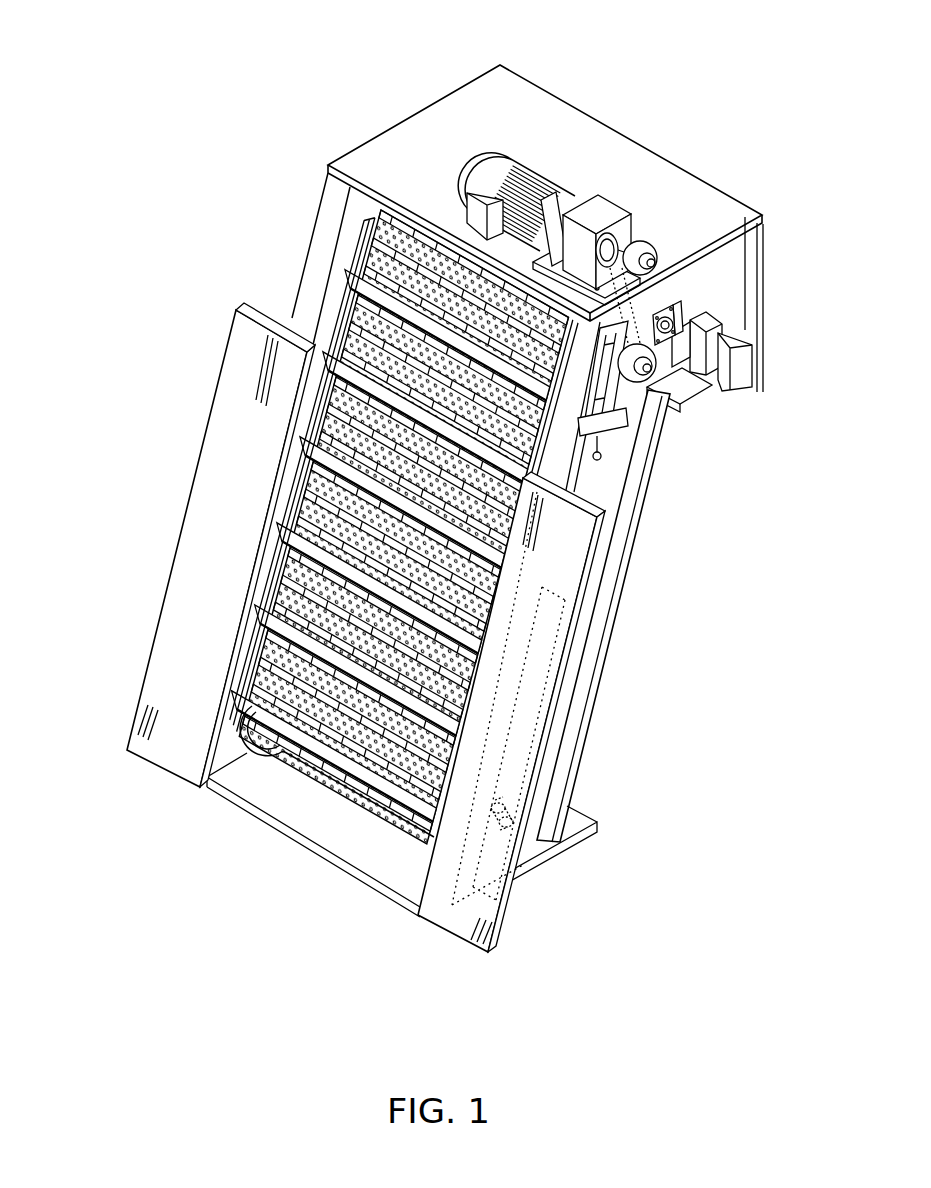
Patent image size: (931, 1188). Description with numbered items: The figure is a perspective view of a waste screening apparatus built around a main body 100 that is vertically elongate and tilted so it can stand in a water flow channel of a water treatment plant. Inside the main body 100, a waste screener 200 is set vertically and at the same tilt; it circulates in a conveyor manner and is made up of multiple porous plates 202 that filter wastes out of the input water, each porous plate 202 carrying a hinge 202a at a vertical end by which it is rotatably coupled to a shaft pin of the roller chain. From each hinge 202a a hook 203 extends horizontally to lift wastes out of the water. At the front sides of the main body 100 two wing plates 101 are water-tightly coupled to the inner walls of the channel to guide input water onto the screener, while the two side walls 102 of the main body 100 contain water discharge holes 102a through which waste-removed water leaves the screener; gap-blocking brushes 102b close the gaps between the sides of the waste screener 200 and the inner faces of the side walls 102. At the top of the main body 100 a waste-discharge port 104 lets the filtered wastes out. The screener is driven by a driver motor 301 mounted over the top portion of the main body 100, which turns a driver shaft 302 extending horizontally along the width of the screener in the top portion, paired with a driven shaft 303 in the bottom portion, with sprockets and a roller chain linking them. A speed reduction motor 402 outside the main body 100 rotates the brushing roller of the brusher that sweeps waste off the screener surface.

The main body 100 is at (344, 132).
The waste screener 200 is at (323, 518).
The hook 203 is at (365, 246).
The porous plate 202 is at (320, 470).
The hinge 202a is at (298, 512).
The wing plate 101 is at (170, 628).
The side wall 102 is at (559, 712).
The water discharge hole 102a is at (508, 698).
The gap-blocking brush 102b is at (262, 672).
The driver motor 301 is at (618, 213).
The speed reduction motor 402 is at (688, 316).
The waste-discharge port 104 is at (710, 400).
The driver shaft 302 is at (677, 407).
The driven shaft 303 is at (520, 823).